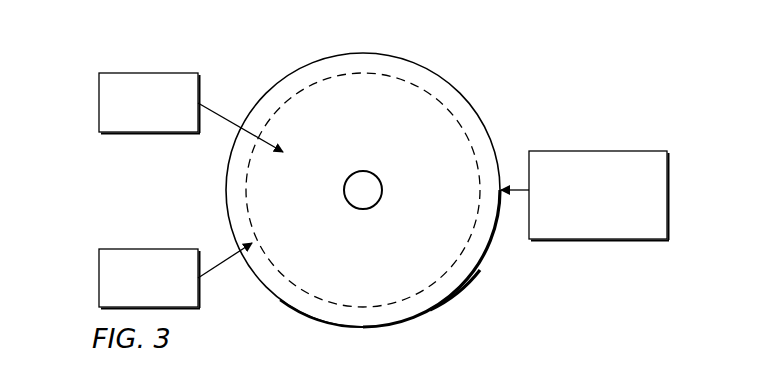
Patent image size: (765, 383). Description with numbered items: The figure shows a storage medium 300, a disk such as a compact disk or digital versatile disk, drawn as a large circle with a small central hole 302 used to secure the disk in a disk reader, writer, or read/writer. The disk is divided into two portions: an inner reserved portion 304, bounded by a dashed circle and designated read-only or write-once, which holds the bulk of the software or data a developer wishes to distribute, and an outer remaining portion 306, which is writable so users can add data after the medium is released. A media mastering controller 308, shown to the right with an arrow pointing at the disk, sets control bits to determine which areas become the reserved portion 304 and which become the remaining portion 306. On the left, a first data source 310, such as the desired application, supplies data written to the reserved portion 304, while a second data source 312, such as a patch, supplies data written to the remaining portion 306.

The storage medium 300 is at (496, 58).
The hole 302 is at (378, 205).
The reserved portion 304 is at (381, 126).
The remaining portion 306 is at (467, 282).
The media mastering controller 308 is at (667, 193).
The data source 310 is at (99, 104).
The data source 312 is at (99, 278).